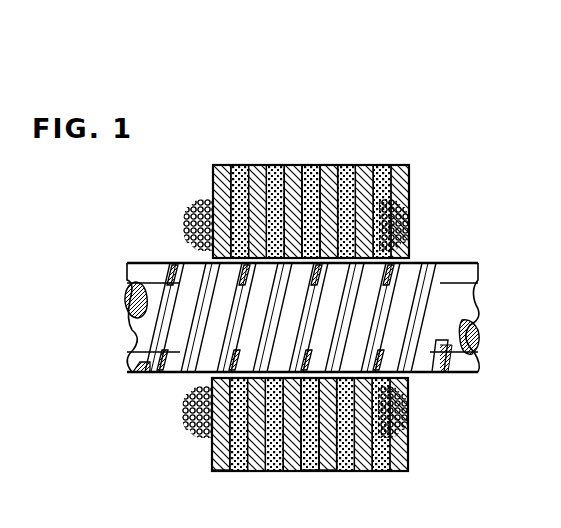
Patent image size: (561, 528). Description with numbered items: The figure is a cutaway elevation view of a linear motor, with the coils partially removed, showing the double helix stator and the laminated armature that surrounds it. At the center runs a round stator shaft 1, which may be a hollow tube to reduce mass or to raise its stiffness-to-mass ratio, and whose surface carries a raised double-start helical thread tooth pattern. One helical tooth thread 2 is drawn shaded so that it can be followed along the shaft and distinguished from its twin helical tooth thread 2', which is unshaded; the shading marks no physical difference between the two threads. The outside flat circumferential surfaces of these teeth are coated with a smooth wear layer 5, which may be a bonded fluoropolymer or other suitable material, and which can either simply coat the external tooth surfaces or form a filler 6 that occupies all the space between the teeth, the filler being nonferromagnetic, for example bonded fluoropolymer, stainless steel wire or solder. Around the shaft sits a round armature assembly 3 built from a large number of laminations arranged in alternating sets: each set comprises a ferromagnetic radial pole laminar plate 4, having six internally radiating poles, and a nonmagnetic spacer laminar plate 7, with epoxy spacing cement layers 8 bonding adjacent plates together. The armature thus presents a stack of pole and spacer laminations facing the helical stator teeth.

The stator shaft 1 is at (126, 296).
The helical tooth thread 2 is at (301, 294).
The twin helical tooth thread 2' is at (478, 284).
The armature assembly 3 is at (410, 40).
The laminar plate 4 is at (258, 160).
The wear layer 5 is at (146, 378).
The filler 6 is at (422, 374).
The spacer laminar plate 7 is at (313, 160).
The spacing cement layer 8 is at (290, 165).